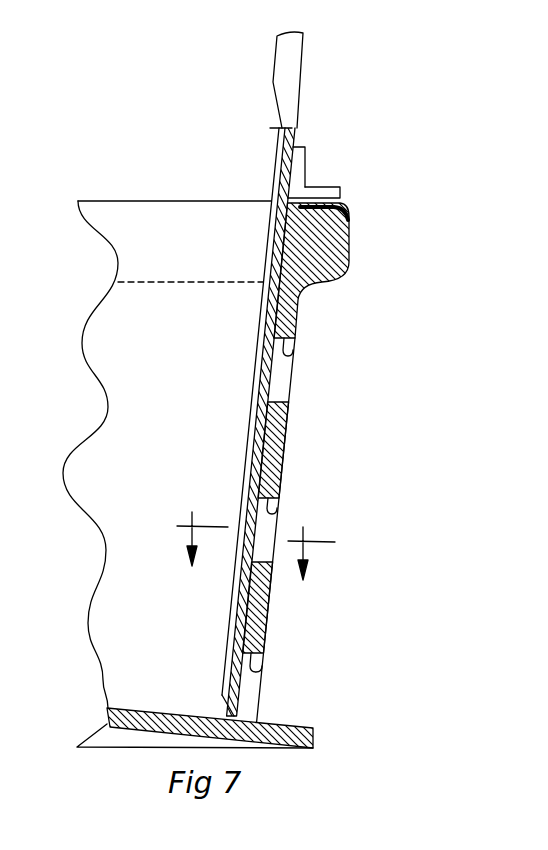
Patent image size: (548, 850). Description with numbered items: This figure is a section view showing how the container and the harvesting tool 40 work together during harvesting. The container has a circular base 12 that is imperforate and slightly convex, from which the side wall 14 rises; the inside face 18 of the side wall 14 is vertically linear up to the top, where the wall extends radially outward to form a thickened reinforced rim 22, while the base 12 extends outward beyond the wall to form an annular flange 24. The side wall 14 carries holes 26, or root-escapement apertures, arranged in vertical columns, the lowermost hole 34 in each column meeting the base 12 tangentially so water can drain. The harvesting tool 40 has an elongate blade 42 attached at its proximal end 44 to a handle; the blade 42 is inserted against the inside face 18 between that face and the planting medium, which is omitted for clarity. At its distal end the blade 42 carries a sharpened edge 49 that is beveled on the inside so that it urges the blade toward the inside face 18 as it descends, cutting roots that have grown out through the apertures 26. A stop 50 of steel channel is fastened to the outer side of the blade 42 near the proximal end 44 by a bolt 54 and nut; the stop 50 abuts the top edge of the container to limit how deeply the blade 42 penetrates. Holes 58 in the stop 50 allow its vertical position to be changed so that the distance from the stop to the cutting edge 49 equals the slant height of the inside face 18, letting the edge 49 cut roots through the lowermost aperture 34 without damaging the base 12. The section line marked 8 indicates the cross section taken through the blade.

The section line 8- 8 is at (256, 534).
The circular base 12 is at (103, 716).
The side wall 14 is at (80, 345).
The inside face 18 is at (268, 437).
The thickened reinforced rim 22 is at (352, 246).
The annular flange 24 is at (310, 727).
The holes 26 is at (293, 357).
The lowermost hole 34 is at (259, 669).
The harvesting tool 40 is at (318, 51).
The elongate blade 42 is at (262, 322).
The proximal end 44 is at (300, 138).
The sharpened edge 49 is at (228, 706).
The stop 50 is at (342, 190).
The bolt 54 is at (308, 161).
The holes 58 is at (350, 212).